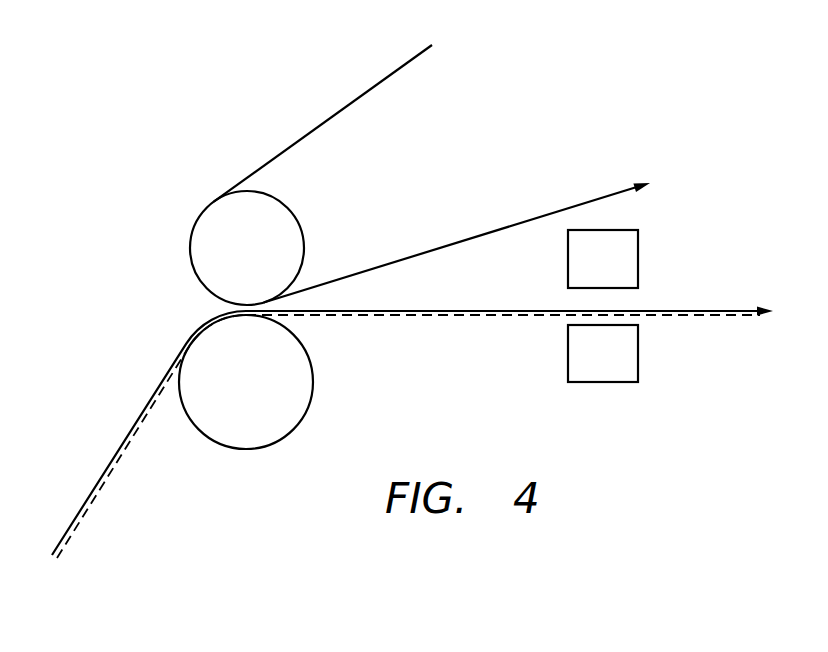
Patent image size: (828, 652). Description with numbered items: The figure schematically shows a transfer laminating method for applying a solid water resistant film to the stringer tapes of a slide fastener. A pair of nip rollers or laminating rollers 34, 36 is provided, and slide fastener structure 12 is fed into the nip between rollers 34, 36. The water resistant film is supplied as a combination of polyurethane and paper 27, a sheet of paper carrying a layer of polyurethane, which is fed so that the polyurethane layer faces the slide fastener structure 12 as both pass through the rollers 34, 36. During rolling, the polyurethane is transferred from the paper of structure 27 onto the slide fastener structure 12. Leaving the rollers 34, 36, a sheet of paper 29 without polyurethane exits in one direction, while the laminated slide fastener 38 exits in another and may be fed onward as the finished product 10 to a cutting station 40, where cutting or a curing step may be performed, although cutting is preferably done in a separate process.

The laminated web product 10 is at (734, 296).
The slide fastener structure 12 is at (90, 503).
The combination of polyurethane and paper 27 is at (320, 125).
The sheet of paper 29 is at (495, 231).
The nip roller 34 is at (262, 260).
The nip roller 36 is at (264, 392).
The laminated slide fastener 38 is at (485, 309).
The cutting station 40 is at (638, 250).